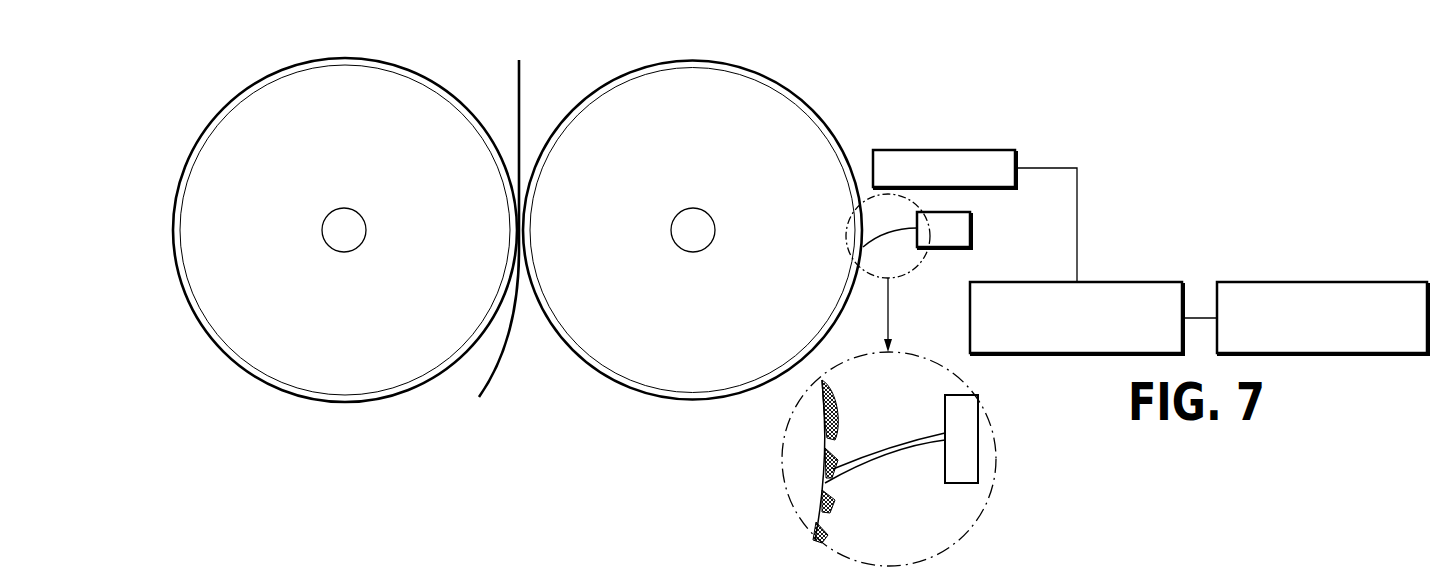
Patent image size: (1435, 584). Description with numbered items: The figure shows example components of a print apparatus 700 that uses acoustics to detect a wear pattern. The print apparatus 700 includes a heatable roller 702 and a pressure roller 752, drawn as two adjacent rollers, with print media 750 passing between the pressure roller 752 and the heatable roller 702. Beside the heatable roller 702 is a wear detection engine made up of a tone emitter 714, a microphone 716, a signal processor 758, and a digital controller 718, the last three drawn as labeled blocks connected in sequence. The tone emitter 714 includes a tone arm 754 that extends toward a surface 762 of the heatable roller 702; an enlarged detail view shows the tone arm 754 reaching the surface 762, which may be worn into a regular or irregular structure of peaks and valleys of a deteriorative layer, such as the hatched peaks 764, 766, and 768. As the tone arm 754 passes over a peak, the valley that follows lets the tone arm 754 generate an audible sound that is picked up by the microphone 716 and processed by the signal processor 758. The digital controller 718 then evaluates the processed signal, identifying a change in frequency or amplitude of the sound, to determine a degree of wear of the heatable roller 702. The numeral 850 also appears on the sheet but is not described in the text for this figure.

The print apparatus 700 is at (158, 118).
The heatable roller 702 is at (712, 163).
The tone emitter 714 is at (972, 230).
The microphone 716 is at (945, 148).
The digital controller 718 is at (1325, 280).
The print media 750 is at (500, 362).
The pressure roller 752 is at (363, 163).
The tone arm 754 is at (900, 455).
The signal processor 758 is at (1137, 280).
The surface 762 is at (805, 92).
The peak 764 is at (838, 410).
The peak 766 is at (823, 444).
The peak 768 is at (837, 507).
The reference numeral 850 is at (509, 583).